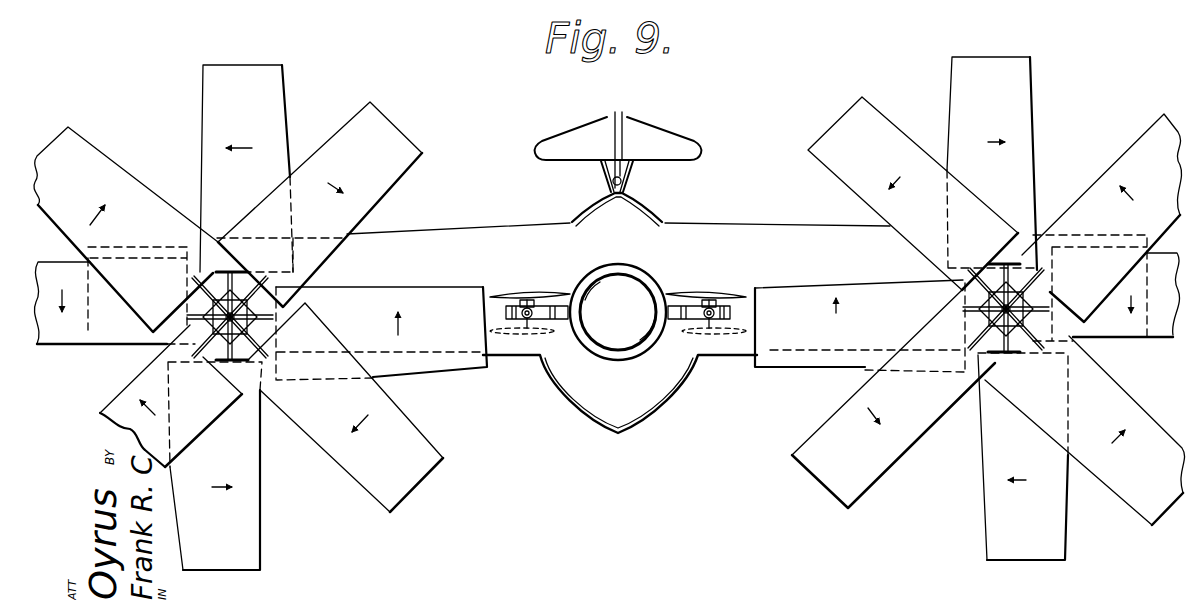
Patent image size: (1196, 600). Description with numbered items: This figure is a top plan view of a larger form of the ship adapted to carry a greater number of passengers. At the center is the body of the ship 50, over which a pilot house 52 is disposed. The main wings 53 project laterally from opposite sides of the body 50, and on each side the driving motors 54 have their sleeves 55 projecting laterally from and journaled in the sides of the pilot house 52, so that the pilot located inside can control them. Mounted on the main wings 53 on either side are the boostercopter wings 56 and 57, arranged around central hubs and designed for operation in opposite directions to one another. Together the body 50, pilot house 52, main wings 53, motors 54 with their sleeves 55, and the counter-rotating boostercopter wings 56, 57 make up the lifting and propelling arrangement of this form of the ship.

The body of the ship 50 is at (650, 408).
The pilot house 52 is at (625, 340).
The main wings 53 is at (470, 214).
The driving motors 54 is at (537, 307).
The sleeves 55 is at (560, 319).
The boostercopter wings 56 is at (445, 281).
The boostercopter wings 57 is at (390, 140).